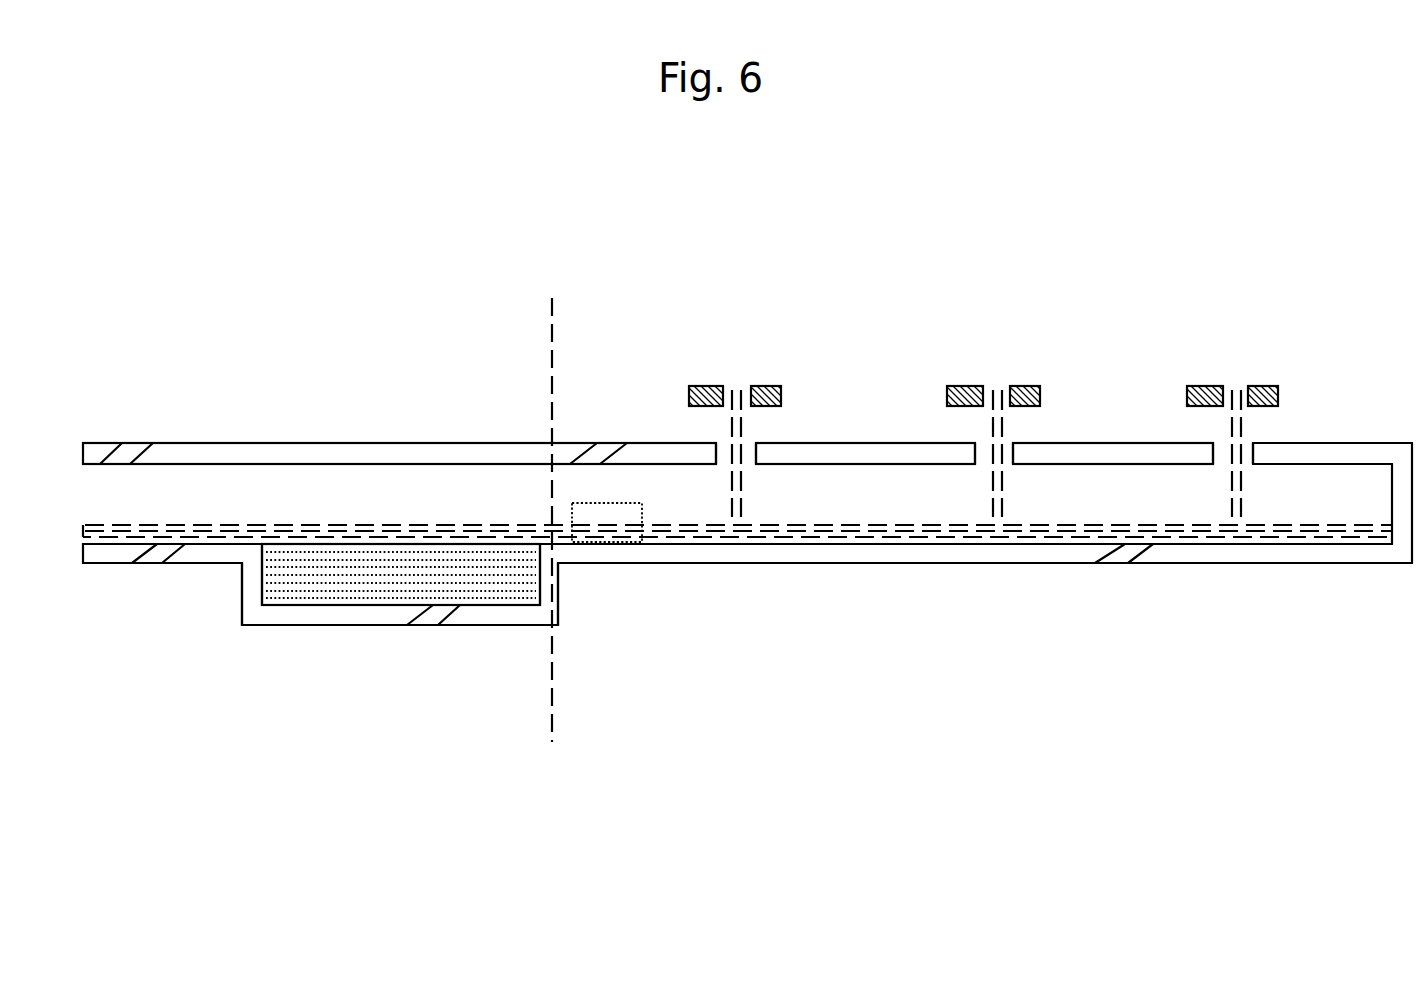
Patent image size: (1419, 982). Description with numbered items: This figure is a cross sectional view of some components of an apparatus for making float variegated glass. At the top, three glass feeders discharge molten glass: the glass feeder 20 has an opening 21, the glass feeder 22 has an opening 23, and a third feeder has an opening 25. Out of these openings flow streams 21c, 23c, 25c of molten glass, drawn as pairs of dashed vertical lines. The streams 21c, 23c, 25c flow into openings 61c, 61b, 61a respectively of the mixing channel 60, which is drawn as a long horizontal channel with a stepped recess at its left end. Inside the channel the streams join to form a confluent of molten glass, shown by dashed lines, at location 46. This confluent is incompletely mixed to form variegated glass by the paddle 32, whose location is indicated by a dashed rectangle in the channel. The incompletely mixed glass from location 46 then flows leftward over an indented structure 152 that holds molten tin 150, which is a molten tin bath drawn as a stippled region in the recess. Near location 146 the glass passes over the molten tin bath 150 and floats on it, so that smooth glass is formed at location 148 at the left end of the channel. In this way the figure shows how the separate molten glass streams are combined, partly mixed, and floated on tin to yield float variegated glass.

The glass feeder 20 is at (755, 372).
The opening 21 is at (727, 382).
The glass feeder 22 is at (1008, 370).
The opening 23 is at (992, 377).
The opening 25 is at (1233, 378).
The stream of molten glass 21c is at (745, 506).
The stream of molten glass 23c is at (1006, 505).
The stream of molten glass 25c is at (1243, 510).
The opening 61a is at (1246, 441).
The opening 61b is at (1007, 437).
The opening 61c is at (748, 440).
The mixing channel 60 is at (1292, 560).
The paddle 32 is at (611, 512).
The location of confluent of molten glass 46 is at (692, 537).
The location 146 is at (357, 517).
The location 148 is at (151, 518).
The molten tin bath 150 is at (378, 592).
The indented structure 152 is at (332, 622).